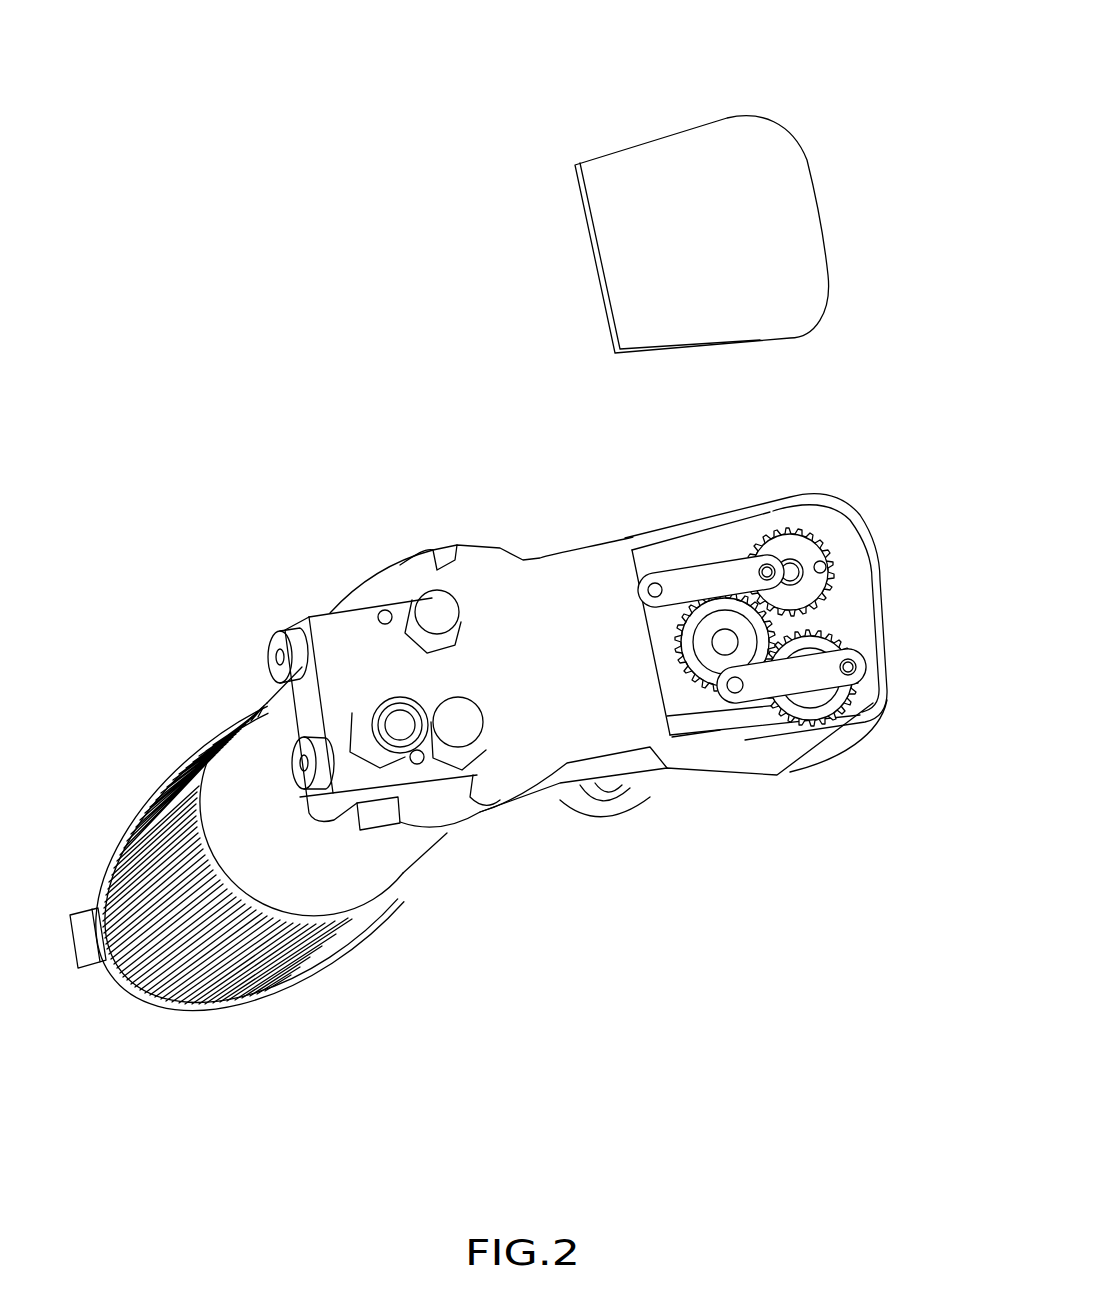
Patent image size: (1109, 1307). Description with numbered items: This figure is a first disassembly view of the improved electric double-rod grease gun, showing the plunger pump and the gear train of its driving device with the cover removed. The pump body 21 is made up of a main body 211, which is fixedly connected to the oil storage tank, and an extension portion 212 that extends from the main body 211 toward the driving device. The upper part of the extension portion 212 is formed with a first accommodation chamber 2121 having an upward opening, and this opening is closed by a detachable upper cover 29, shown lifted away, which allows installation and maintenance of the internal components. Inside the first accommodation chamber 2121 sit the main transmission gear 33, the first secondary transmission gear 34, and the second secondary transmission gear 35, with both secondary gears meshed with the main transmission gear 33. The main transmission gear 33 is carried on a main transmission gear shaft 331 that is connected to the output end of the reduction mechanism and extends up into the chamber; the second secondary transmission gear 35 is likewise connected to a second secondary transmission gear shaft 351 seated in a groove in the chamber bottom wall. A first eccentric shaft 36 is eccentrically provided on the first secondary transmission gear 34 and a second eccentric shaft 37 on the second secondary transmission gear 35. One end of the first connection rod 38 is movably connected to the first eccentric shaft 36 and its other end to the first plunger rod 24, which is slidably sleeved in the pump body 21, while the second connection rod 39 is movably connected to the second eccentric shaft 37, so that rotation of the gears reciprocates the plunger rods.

The upper cover 29 is at (642, 177).
The pump body 21 is at (548, 600).
The main body 211 is at (338, 637).
The extension portion 212 is at (857, 533).
The first accommodation chamber 2121 is at (837, 627).
The main transmission gear 33 is at (672, 647).
The main transmission gear shaft 331 is at (728, 645).
The first secondary transmission gear 34 is at (860, 703).
The second secondary transmission gear 35 is at (812, 553).
The second secondary transmission gear shaft 351 is at (795, 560).
The first eccentric shaft 36 is at (890, 643).
The second eccentric shaft 37 is at (767, 557).
The first connection rod 38 is at (795, 683).
The second connection rod 39 is at (712, 580).
The first plunger rod 24 is at (692, 703).